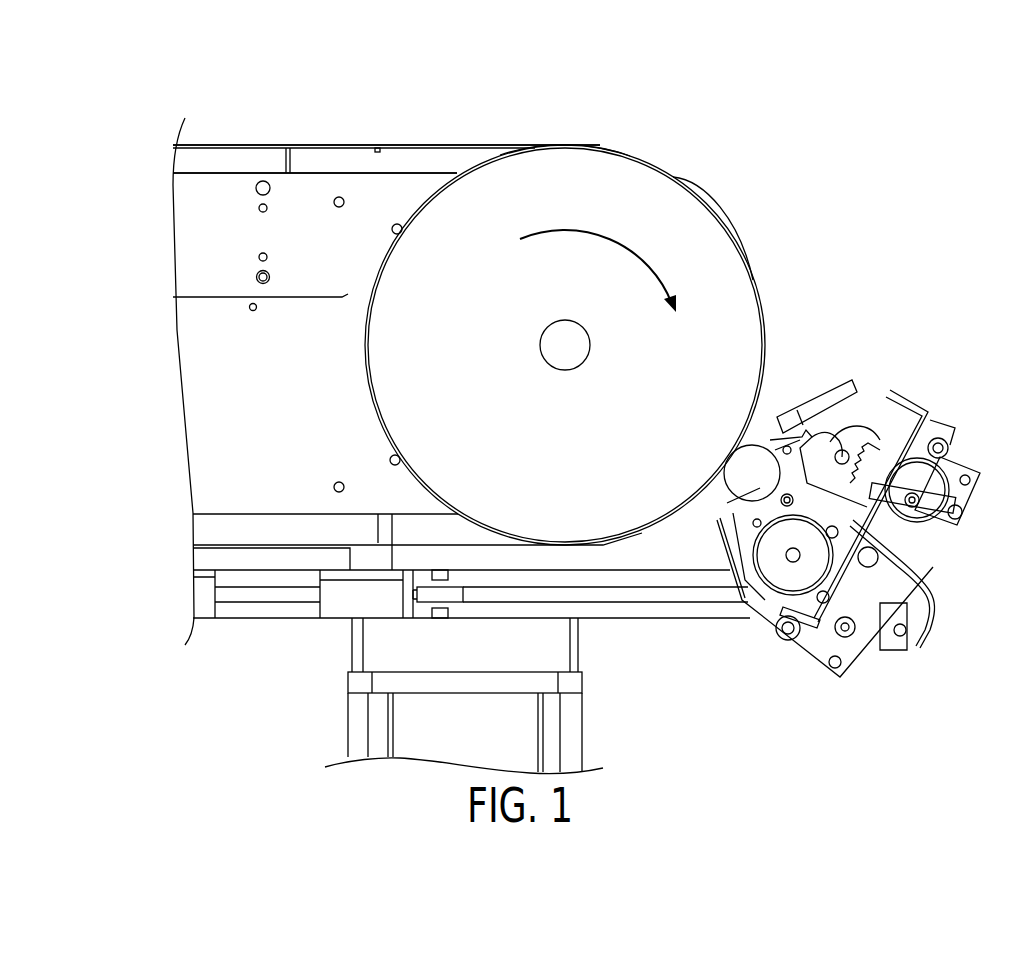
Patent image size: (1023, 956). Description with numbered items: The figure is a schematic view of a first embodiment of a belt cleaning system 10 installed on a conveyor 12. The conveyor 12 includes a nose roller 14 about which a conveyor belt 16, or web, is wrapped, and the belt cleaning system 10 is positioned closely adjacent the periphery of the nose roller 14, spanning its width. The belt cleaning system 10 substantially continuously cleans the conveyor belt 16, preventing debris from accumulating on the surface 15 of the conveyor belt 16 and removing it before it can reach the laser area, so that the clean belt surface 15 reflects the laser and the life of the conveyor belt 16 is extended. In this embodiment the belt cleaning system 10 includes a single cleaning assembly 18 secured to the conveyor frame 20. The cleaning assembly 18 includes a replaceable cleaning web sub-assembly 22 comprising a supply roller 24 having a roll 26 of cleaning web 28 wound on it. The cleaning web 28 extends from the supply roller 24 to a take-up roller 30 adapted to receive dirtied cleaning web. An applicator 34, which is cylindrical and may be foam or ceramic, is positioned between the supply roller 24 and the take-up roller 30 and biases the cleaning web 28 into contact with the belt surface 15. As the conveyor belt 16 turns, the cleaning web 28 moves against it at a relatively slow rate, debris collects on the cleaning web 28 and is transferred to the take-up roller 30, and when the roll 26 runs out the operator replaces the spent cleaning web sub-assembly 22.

The belt cleaning system 10 is at (828, 258).
The conveyor 12 is at (387, 102).
The nose roller 14 is at (515, 426).
The surface of the conveyor belt 15 is at (430, 145).
The conveyor belt 16 is at (530, 145).
The cleaning assembly 18 is at (758, 692).
The conveyor frame 20 is at (622, 623).
The cleaning web sub-assembly 22 is at (838, 450).
The supply roller 24 is at (790, 565).
The roll of cleaning web 26 is at (770, 548).
The cleaning web 28 is at (772, 442).
The take-up roller 30 is at (860, 450).
The applicator 34 is at (740, 467).